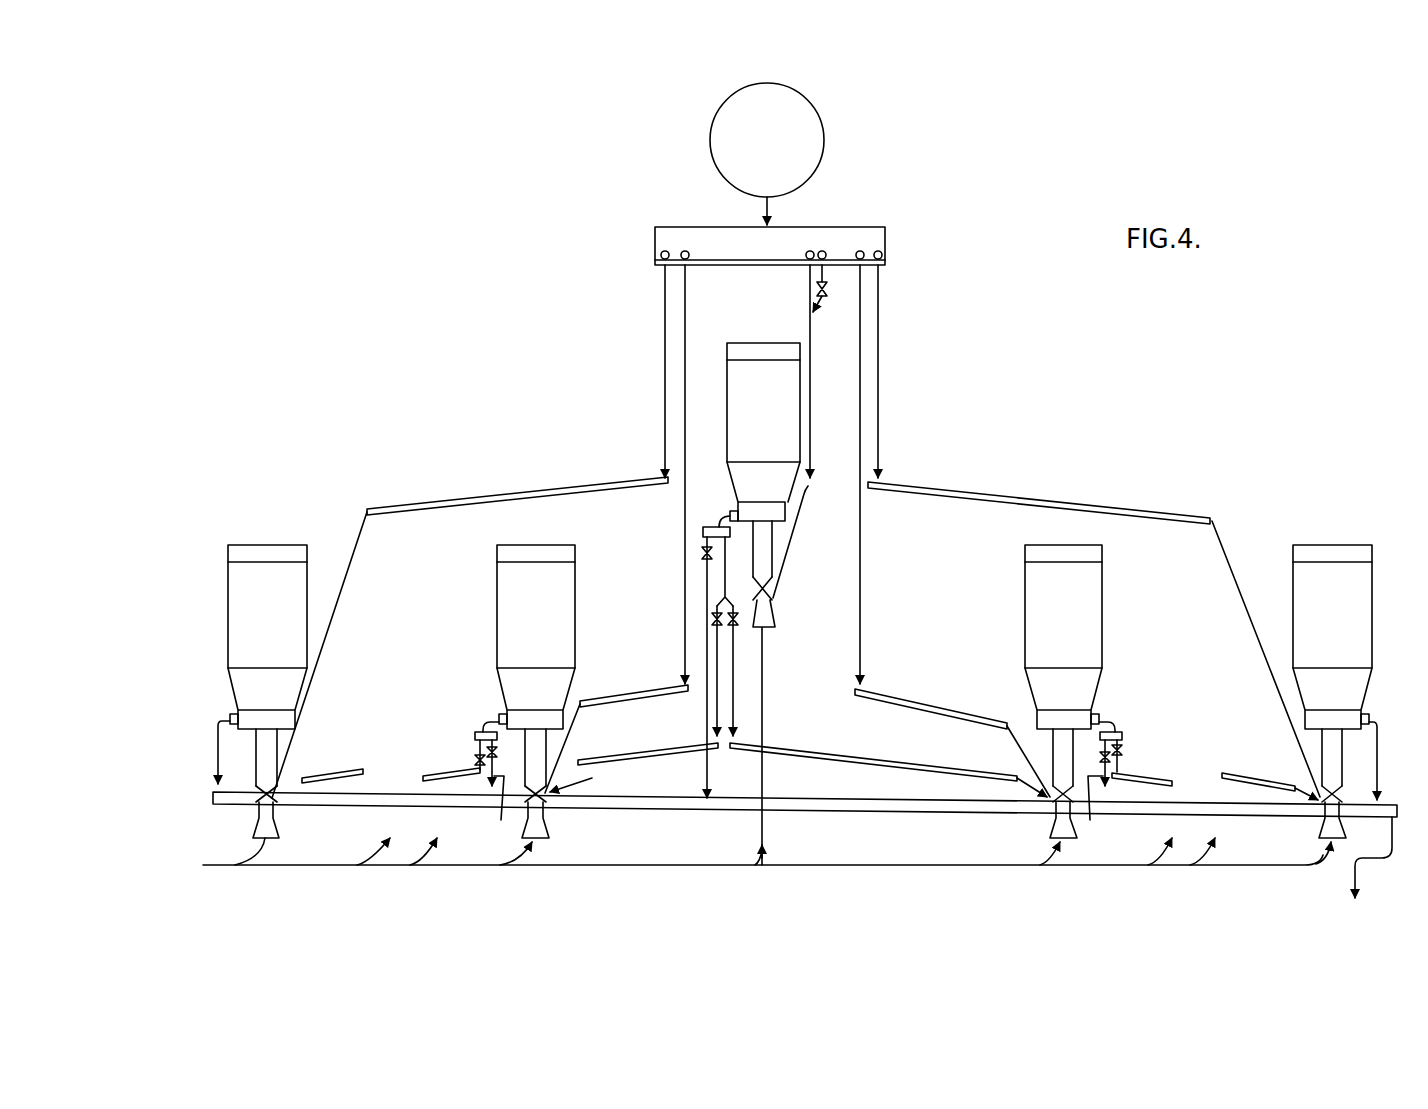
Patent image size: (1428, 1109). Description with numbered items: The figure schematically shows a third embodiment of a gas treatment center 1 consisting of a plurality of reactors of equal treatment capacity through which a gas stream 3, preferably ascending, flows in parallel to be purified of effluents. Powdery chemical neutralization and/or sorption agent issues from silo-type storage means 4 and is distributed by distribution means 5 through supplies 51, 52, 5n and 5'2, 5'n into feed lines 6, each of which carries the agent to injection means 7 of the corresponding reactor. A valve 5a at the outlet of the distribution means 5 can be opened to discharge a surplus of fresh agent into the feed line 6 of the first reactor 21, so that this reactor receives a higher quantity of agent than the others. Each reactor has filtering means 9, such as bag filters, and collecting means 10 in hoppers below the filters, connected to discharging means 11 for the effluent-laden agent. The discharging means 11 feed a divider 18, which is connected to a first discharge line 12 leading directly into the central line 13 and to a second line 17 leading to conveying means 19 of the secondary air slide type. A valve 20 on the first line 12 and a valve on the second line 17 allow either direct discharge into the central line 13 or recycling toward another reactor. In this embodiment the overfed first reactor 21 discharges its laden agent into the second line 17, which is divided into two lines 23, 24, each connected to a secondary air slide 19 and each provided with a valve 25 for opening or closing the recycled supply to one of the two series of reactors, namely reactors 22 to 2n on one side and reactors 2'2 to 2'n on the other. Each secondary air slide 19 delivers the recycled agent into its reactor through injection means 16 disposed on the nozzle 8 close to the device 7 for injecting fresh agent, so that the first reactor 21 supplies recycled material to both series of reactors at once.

The gas treatment center 1 is at (1105, 448).
The reactor 2n is at (257, 615).
The reactor 22 is at (525, 610).
The first reactor 21 is at (745, 398).
The reactor 2'2 is at (1027, 606).
The reactor 2'n is at (1301, 604).
The gas stream 3 is at (690, 866).
The storage means 4 is at (712, 128).
The distribution means 5 is at (806, 240).
The supply 5n is at (662, 292).
The supply 52 is at (683, 333).
The supply 51 is at (808, 365).
The valve 5a is at (829, 286).
The supply 5'2 is at (899, 474).
The supply 5'n is at (898, 371).
The feed line 6 is at (553, 490).
The injection means 7 is at (778, 605).
The nozzle 8 is at (258, 768).
The filtering means 9 is at (272, 562).
The collecting means 10 is at (300, 695).
The discharging means 11 is at (230, 713).
The first discharge line 12 is at (705, 603).
The central line 13 is at (824, 812).
The injection means 16 is at (275, 805).
The second line 17 is at (717, 576).
The divider 18 is at (703, 530).
The conveying means 19 is at (335, 772).
The valve 20 is at (589, 781).
The line 23 is at (716, 702).
The line 24 is at (733, 688).
The valve 25 is at (715, 625).